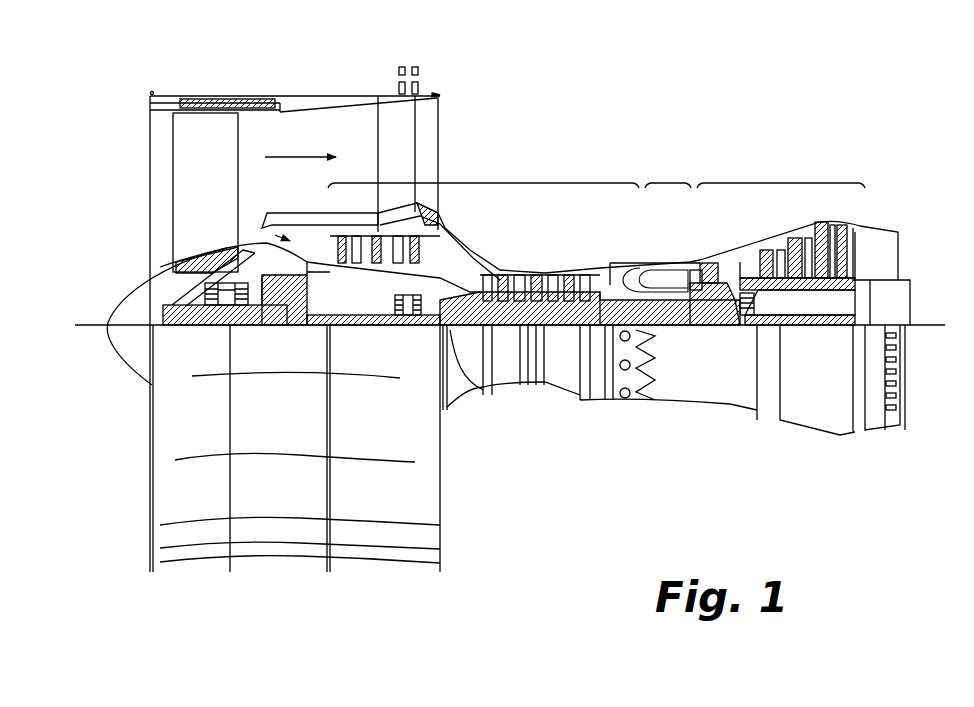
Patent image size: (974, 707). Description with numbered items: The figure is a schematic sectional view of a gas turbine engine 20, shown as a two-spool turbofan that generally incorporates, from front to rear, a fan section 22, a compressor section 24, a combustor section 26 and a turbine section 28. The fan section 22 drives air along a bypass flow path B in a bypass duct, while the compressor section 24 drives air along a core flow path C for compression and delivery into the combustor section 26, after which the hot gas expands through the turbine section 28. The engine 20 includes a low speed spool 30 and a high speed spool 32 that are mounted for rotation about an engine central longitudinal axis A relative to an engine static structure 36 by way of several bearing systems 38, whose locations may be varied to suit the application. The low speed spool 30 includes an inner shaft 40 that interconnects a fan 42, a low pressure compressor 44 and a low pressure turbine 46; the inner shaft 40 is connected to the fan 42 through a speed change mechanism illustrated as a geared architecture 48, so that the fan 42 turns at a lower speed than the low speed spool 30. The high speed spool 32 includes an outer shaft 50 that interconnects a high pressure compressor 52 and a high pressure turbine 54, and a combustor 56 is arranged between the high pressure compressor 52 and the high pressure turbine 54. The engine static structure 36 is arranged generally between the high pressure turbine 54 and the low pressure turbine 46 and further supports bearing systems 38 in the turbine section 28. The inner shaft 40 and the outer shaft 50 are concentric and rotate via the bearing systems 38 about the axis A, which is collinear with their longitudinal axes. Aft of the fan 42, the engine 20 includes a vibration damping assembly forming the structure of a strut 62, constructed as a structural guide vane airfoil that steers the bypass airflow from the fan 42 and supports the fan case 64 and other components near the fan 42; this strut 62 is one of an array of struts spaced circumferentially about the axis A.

The gas turbine engine 20 is at (672, 118).
The fan section 22 is at (148, 65).
The compressor section 24 is at (488, 183).
The combustor section 26 is at (665, 183).
The turbine section 28 is at (800, 183).
The low speed spool 30 is at (565, 338).
The high speed spool 32 is at (598, 305).
The engine static structure 36 is at (598, 405).
The bearing systems 38 is at (213, 326).
The inner shaft 40 is at (482, 395).
The fan 42 is at (213, 200).
The low pressure compressor 44 is at (437, 212).
The low pressure turbine 46 is at (807, 222).
The geared architecture 48 is at (302, 326).
The outer shaft 50 is at (660, 326).
The high pressure compressor 52 is at (543, 279).
The high pressure turbine 54 is at (707, 262).
The combustor 56 is at (658, 280).
The strut 62 is at (408, 128).
The fan case 64 is at (363, 96).
The engine central longitudinal axis A is at (934, 325).
The bypass flow path B is at (293, 155).
The core flow path C is at (275, 235).